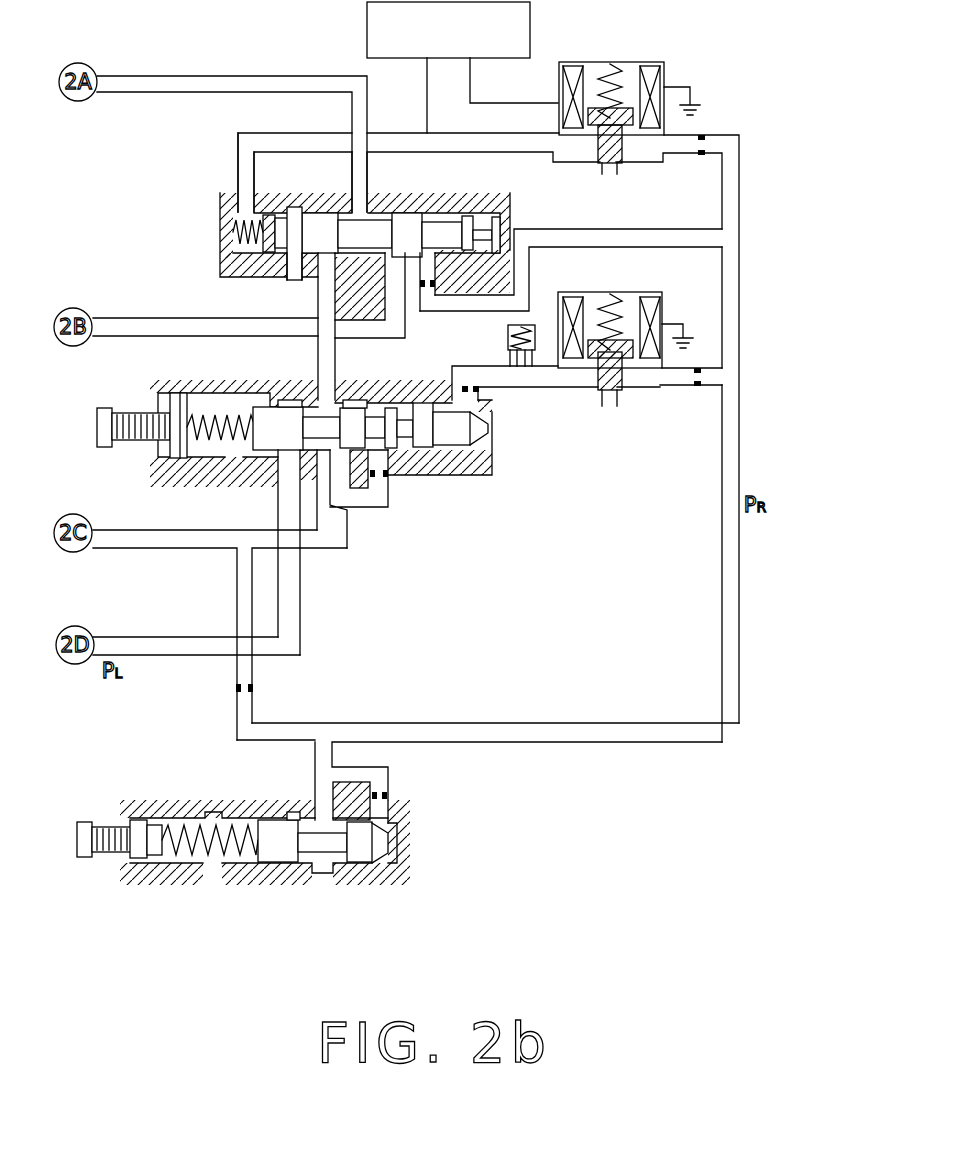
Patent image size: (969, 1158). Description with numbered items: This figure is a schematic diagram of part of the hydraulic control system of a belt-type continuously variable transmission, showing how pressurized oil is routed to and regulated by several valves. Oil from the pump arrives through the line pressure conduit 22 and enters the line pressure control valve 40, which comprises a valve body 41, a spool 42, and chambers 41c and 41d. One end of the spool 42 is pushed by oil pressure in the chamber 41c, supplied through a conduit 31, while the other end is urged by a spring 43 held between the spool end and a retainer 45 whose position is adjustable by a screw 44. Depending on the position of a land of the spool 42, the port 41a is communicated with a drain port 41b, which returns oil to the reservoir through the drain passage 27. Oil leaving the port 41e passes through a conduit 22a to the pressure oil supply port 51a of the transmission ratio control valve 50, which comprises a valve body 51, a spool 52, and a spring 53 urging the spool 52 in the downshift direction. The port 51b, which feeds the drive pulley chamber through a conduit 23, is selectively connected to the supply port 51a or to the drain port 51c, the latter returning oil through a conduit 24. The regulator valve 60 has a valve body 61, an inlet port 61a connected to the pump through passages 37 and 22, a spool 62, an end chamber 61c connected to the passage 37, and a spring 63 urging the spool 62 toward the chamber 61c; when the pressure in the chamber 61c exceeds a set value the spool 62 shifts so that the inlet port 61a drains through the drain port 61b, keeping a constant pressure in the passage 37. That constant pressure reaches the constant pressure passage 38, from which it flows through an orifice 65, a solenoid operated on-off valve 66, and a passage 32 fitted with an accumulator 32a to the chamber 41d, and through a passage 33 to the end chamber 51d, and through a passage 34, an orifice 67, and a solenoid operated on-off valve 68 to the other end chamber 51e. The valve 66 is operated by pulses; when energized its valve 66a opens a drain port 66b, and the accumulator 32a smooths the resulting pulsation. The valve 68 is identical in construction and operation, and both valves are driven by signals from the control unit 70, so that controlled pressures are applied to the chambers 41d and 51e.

The line pressure conduit 22 is at (143, 530).
The conduit 22a is at (317, 303).
The conduit 23 is at (188, 76).
The conduit 24 is at (200, 319).
The drain passage 27 is at (157, 645).
The conduit 31 is at (395, 520).
The passage 32 is at (543, 378).
The accumulator 32a is at (509, 364).
The passage 33 is at (632, 234).
The passage 34 is at (468, 144).
The passage 37 is at (283, 728).
The constant pressure passage 38 is at (737, 290).
The line pressure control valve 40 is at (468, 486).
The valve body 41 is at (443, 396).
The port 41a is at (345, 535).
The drain port 41b is at (288, 465).
The chamber 41c is at (402, 477).
The chamber 41d is at (482, 448).
The port 41e is at (330, 398).
The spool 42 is at (355, 405).
The spring 43 is at (228, 410).
The screw 44 is at (103, 447).
The retainer 45 is at (178, 456).
The transmission ratio control valve 50 is at (478, 194).
The valve body 51 is at (415, 205).
The pressure oil supply port 51a is at (320, 268).
The port 51b is at (357, 210).
The drain port 51c is at (369, 295).
The end chamber 51d is at (430, 210).
The end chamber 51e is at (243, 212).
The spool 52 is at (310, 228).
The spring 53 is at (233, 214).
The regulator valve 60 is at (420, 844).
The valve body 61 is at (180, 873).
The inlet port 61a is at (315, 807).
The drain port 61b is at (300, 880).
The end chamber 61c is at (390, 864).
The spool 62 is at (277, 858).
The spring 63 is at (212, 822).
The orifice 65 is at (697, 386).
The solenoid operated on-off valve 66 is at (655, 292).
The valve 66a is at (622, 378).
The drain port 66b is at (610, 405).
The orifice 67 is at (708, 137).
The solenoid operated on-off valve 68 is at (660, 62).
The control unit 70 is at (532, 32).